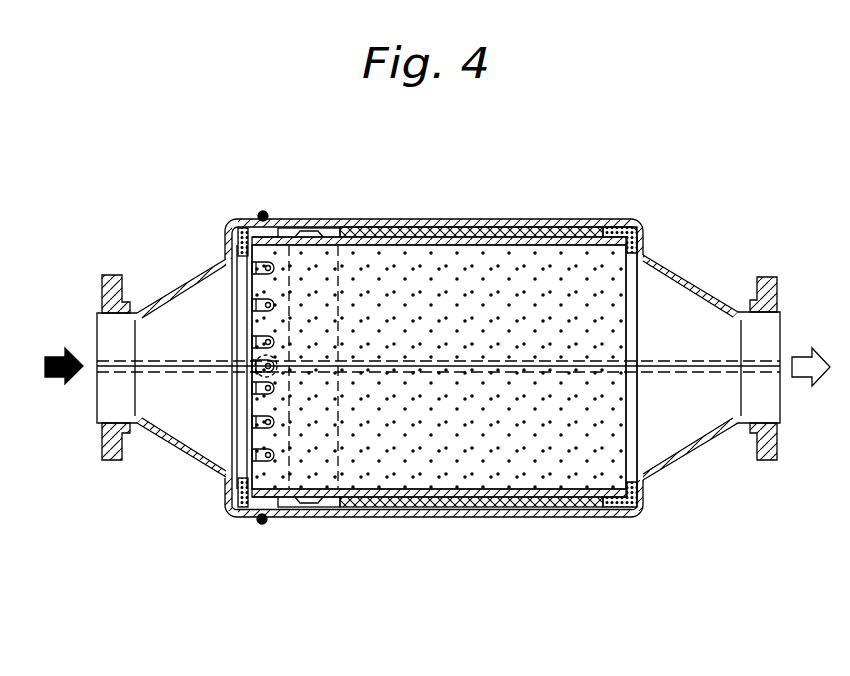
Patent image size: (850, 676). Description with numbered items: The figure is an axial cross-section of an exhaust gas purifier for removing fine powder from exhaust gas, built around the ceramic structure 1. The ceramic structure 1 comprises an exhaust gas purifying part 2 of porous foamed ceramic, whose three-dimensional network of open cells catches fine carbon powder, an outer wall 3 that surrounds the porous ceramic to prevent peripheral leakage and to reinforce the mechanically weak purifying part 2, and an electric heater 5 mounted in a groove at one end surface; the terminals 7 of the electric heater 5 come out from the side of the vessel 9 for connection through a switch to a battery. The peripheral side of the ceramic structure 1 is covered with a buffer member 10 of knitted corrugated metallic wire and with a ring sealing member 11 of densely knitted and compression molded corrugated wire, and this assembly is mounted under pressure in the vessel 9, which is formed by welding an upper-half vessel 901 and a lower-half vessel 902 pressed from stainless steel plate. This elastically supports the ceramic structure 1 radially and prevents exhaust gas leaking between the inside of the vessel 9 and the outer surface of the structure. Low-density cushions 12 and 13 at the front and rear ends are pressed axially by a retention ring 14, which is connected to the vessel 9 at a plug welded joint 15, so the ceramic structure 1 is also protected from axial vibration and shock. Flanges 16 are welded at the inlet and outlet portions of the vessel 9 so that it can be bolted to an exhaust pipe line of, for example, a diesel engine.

The ceramic structure 1 is at (636, 303).
The exhaust gas purifying part 2 is at (385, 250).
The outer wall 3 is at (510, 240).
The electric heater 5 is at (277, 341).
The terminals 7 is at (278, 376).
The vessel 9 is at (633, 215).
The upper-half vessel 901 is at (455, 219).
The lower-half vessel 902 is at (440, 518).
The buffer member 10 is at (518, 500).
The ring sealing member 11 is at (332, 508).
The cushion 12 is at (278, 508).
The cushion 13 is at (630, 515).
The retention ring 14 is at (237, 483).
The plug welded joint 15 is at (262, 523).
The flanges 16 is at (110, 274).